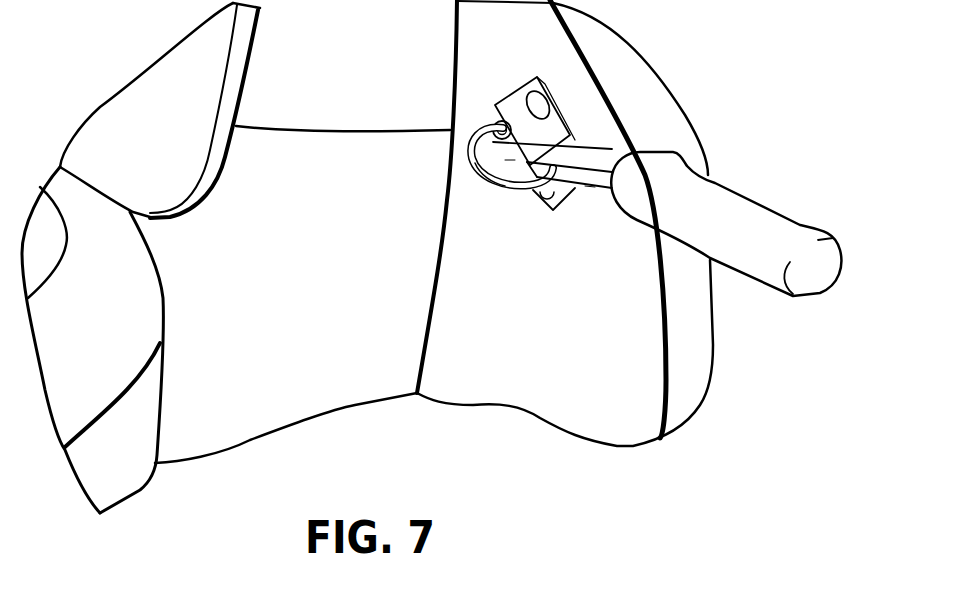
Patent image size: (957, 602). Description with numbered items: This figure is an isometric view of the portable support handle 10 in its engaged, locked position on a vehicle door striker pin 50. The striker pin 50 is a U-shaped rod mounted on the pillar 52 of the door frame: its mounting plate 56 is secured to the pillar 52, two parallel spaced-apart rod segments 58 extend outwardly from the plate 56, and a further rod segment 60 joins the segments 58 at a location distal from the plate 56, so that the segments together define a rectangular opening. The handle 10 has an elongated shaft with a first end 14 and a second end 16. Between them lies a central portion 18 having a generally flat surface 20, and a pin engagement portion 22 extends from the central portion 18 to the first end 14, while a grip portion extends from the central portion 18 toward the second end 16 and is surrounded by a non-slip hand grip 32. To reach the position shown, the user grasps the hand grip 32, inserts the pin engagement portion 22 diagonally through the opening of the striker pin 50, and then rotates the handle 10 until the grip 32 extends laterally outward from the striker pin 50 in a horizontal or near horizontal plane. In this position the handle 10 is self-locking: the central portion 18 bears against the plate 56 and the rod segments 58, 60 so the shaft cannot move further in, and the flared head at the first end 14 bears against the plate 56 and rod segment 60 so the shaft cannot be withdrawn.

The portable support handle 10 is at (602, 196).
The first end 14 is at (477, 168).
The second end 16 is at (812, 268).
The central portion 18 is at (590, 197).
The flat surface 20 is at (583, 157).
The pin engagement portion 22 is at (510, 165).
The hand grip 32 is at (708, 192).
The door striker pin 50 is at (580, 93).
The pillar 52 is at (512, 27).
The mounting plate 56 is at (520, 95).
The rod segments 58 is at (487, 128).
The rod segment 60 is at (493, 175).